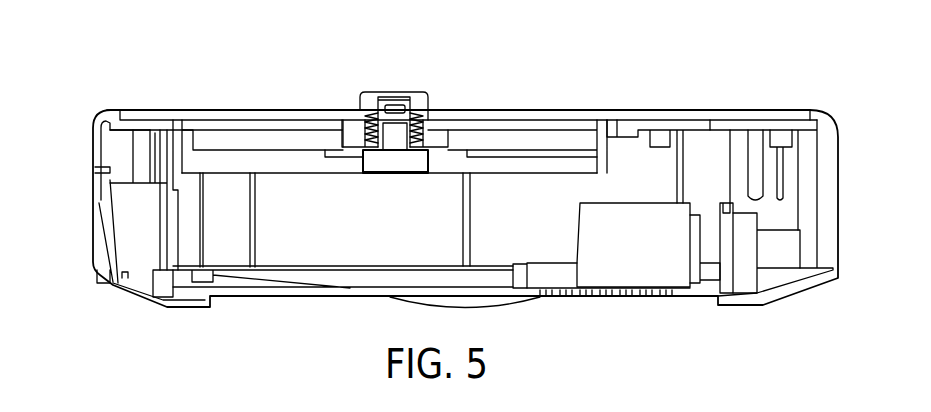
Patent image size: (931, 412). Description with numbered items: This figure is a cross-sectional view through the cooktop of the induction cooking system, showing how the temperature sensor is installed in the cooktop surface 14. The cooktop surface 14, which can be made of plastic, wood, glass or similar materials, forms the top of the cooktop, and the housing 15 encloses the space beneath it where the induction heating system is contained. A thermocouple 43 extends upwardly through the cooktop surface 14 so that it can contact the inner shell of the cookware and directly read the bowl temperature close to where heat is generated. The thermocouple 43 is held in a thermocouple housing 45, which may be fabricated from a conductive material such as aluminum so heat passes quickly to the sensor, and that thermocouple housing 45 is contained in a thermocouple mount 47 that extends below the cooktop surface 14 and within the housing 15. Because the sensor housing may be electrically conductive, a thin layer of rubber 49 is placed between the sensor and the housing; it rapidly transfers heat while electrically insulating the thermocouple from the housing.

The cooktop surface 14 is at (187, 108).
The housing 15 is at (88, 123).
The thermocouple 43 is at (410, 107).
The thermocouple housing 45 is at (372, 85).
The thermocouple mount 47 is at (395, 122).
The thin layer of rubber 49 is at (393, 97).